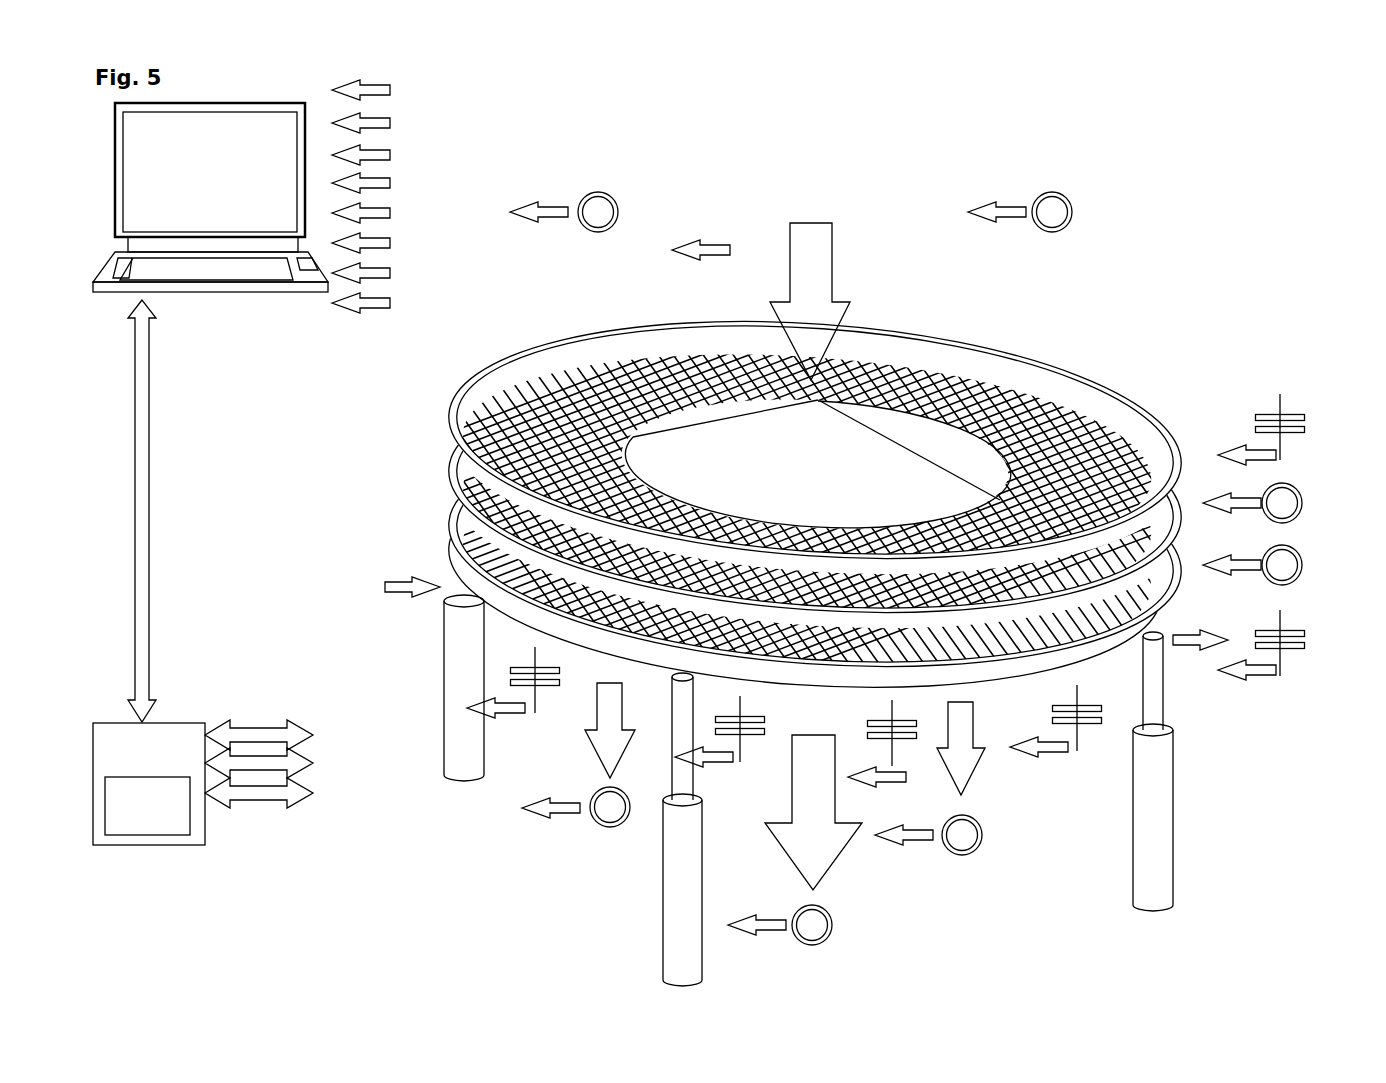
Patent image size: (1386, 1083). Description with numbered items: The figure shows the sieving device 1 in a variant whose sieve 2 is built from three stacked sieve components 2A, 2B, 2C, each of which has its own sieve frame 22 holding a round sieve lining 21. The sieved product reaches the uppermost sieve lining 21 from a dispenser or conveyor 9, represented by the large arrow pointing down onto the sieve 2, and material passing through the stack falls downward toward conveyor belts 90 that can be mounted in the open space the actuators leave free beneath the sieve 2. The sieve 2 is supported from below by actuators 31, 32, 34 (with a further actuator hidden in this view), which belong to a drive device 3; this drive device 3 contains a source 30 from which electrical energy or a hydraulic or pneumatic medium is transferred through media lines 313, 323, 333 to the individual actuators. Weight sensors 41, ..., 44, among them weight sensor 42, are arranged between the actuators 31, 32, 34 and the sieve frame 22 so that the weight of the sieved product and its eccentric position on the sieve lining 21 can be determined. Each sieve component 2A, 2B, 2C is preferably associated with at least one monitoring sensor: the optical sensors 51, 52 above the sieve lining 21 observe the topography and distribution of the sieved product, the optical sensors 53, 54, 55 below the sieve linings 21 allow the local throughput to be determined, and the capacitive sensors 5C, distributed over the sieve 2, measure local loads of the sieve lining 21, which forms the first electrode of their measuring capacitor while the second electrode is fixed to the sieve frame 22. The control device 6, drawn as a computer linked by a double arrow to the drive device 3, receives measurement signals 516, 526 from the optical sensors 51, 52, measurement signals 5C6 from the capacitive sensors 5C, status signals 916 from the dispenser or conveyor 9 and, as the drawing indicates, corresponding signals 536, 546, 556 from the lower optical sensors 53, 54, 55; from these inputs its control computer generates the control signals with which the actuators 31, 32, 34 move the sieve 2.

The sieving device 1 is at (842, 565).
The sieve 2 is at (829, 476).
The first sieve component 2A is at (829, 476).
The second sieve component 2B is at (443, 483).
The third sieve component 2C is at (440, 540).
The sieve lining 21 is at (1108, 425).
The sieve frame 22 is at (1095, 382).
The drive device 3 is at (149, 784).
The source 30 is at (147, 806).
The actuator 31 is at (672, 908).
The actuator 32 is at (457, 748).
The actuator 34 is at (1160, 843).
The weight sensor 41 is at (418, 92).
The weight sensor 44 is at (418, 92).
The weight sensor 42 is at (806, 632).
The capacitive sensor 5C is at (893, 590).
The measurement signal 5C6 is at (797, 500).
The optical sensor 51 is at (618, 198).
The optical sensor 52 is at (1070, 198).
The optical sensor 53 is at (1299, 493).
The optical sensor 54 is at (1299, 555).
The optical sensor 55 is at (596, 821).
The control device 6 is at (210, 197).
The dispenser or conveyor 9 is at (810, 301).
The conveyor belt 90 is at (797, 786).
The media line 313 is at (285, 735).
The media line 323 is at (285, 763).
The media line 333 is at (285, 793).
The measurement signal 516 is at (450, 199).
The measurement signal 526 is at (679, 214).
The sensor signal 536 is at (559, 568).
The sensor signal 546 is at (632, 538).
The sensor signal 556 is at (456, 540).
The status signal 916 is at (557, 187).